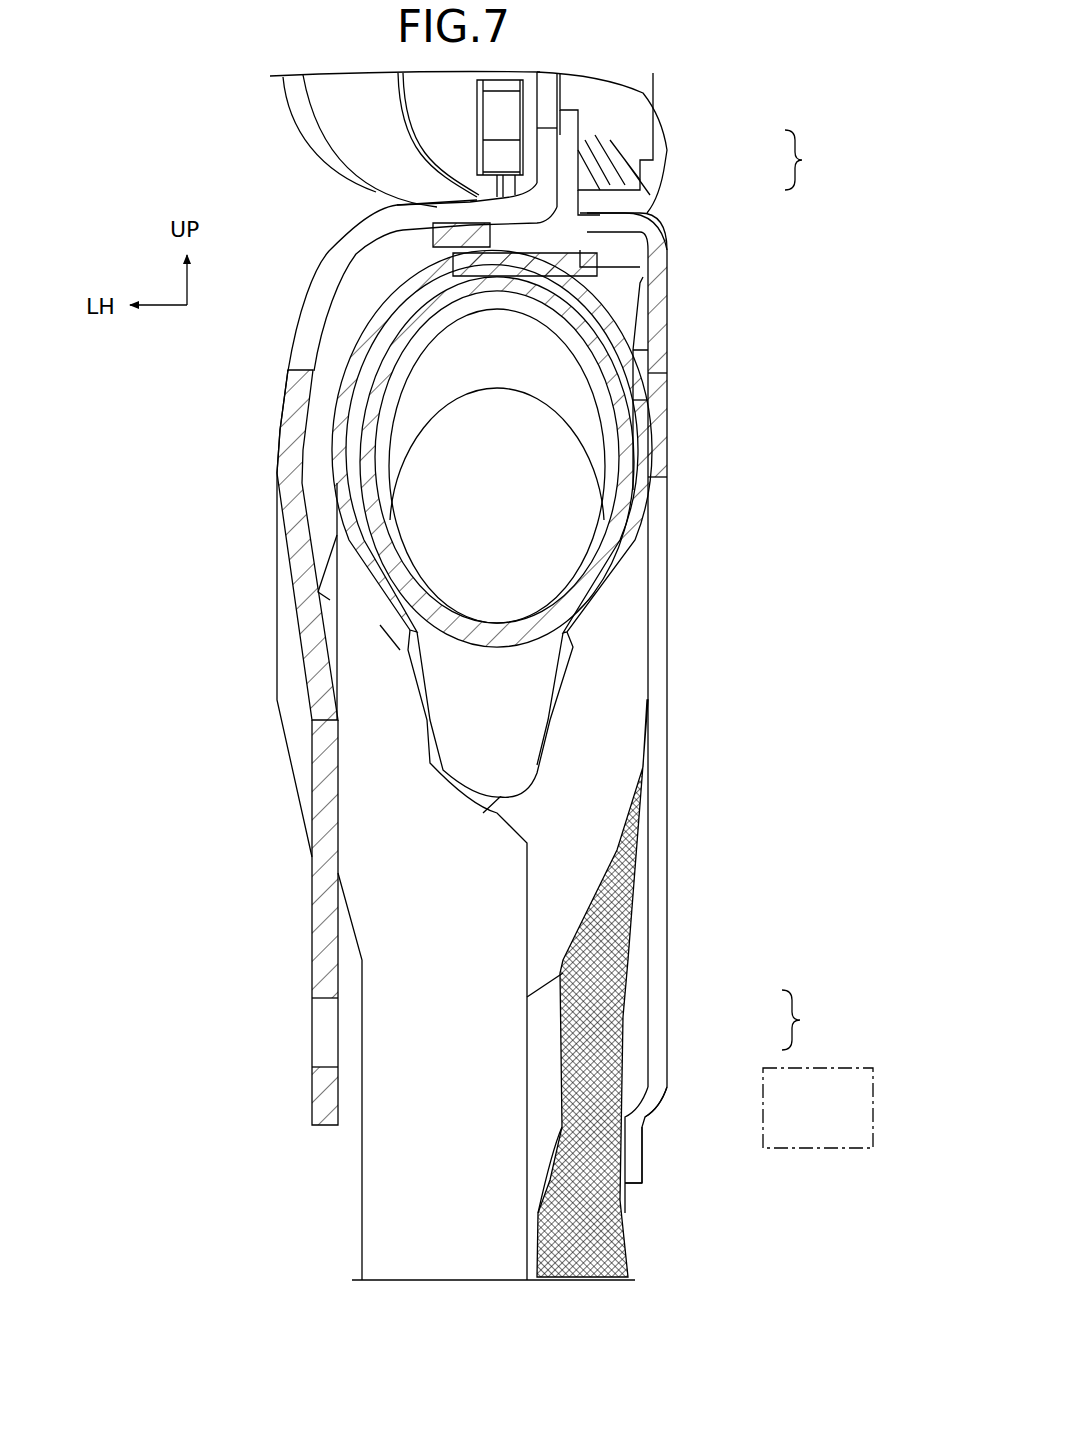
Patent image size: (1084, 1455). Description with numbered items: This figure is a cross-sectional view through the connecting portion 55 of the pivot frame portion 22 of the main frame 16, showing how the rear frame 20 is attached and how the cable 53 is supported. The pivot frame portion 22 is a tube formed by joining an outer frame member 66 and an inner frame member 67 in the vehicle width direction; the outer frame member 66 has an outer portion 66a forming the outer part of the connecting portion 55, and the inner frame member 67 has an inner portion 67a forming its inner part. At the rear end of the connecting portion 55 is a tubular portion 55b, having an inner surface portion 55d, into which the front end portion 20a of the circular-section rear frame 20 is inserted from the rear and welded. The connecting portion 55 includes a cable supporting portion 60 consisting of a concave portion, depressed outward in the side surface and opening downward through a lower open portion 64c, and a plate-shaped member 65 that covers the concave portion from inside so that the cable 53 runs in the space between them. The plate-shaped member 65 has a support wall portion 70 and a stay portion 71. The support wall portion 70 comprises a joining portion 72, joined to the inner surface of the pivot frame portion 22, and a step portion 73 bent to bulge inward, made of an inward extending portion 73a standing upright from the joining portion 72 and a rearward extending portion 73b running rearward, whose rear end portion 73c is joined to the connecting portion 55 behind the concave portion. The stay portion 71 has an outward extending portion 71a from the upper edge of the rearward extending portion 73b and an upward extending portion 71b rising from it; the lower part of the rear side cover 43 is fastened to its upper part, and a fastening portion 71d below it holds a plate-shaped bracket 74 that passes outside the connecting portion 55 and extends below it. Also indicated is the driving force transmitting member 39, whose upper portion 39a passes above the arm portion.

The rear side cover 43 is at (290, 100).
The fastening portion 71d is at (618, 98).
The upward extending portion 71b is at (588, 128).
The outward extending portion 71a is at (587, 204).
The stay portion 71 is at (810, 160).
The cable supporting portion 60 is at (674, 295).
The plate-shaped member 65 is at (674, 350).
The support wall portion 70 is at (675, 672).
The rear end portion 73c is at (660, 412).
The inner portion 67a is at (666, 456).
The inner surface portion 55d is at (642, 493).
The connecting portion 55 is at (330, 590).
The tubular portion 55b is at (632, 565).
The front end portion 20a is at (624, 522).
The rear frame 20 is at (462, 690).
The outer frame member 66 is at (360, 1165).
The outer portion 66a is at (330, 485).
The plate-shaped bracket 74 is at (318, 648).
The pivot frame portion 22 is at (420, 1275).
The main frame 16 is at (453, 1285).
The inner frame member 67 is at (548, 1138).
The cable 53 is at (645, 985).
The lower open portion 64c is at (585, 1192).
The joining portion 72 is at (643, 1173).
The rearward extending portion 73b is at (672, 1035).
The inward extending portion 73a is at (665, 1110).
The step portion 73 is at (808, 1020).
The driving force transmitting member 39 is at (832, 1067).
The upper portion 39a is at (862, 1067).